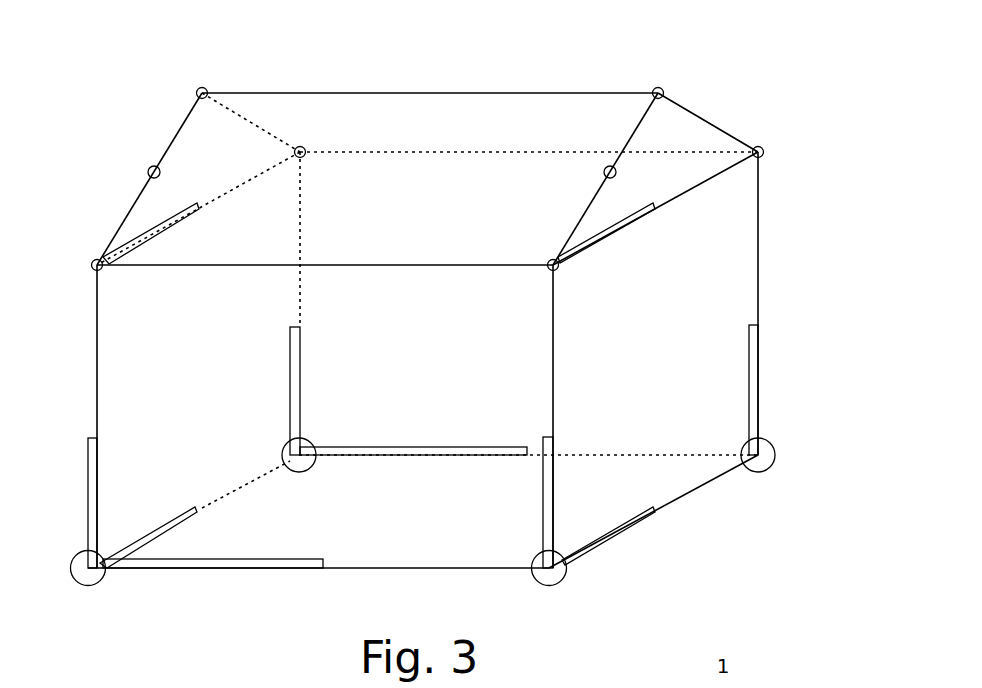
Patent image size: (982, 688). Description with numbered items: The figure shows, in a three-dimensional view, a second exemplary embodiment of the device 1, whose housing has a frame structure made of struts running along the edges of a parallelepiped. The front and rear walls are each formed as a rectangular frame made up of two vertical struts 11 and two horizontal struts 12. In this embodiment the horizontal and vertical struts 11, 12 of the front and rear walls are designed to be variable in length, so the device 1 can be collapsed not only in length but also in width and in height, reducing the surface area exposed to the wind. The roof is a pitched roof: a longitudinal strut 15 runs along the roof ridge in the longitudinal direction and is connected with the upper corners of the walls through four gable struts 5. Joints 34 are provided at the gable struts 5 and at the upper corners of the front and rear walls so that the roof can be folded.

The device 1 is at (742, 58).
The gable strut 5 is at (173, 135).
The vertical strut 11 is at (759, 233).
The horizontal strut 12 is at (688, 495).
The longitudinal strut 15 is at (473, 93).
The joint 34 is at (300, 147).